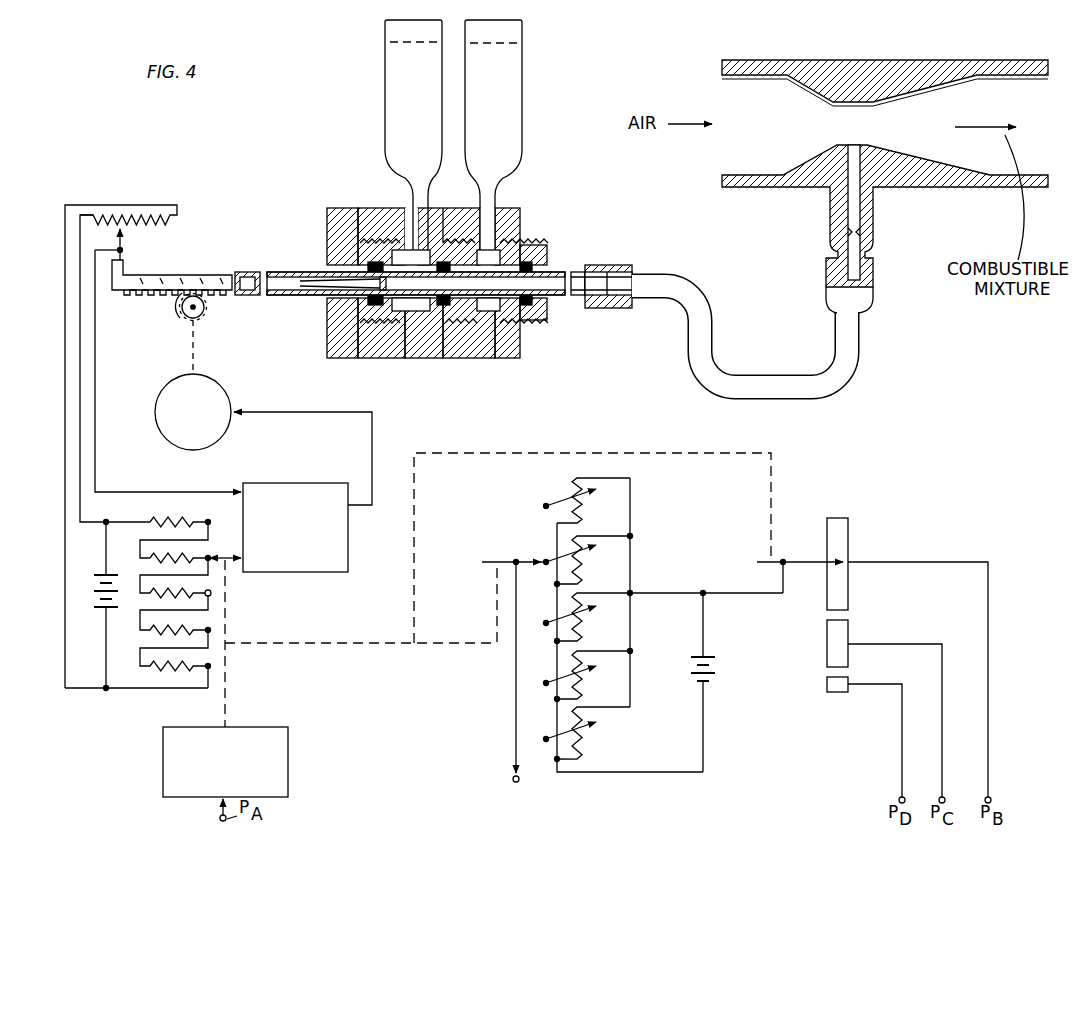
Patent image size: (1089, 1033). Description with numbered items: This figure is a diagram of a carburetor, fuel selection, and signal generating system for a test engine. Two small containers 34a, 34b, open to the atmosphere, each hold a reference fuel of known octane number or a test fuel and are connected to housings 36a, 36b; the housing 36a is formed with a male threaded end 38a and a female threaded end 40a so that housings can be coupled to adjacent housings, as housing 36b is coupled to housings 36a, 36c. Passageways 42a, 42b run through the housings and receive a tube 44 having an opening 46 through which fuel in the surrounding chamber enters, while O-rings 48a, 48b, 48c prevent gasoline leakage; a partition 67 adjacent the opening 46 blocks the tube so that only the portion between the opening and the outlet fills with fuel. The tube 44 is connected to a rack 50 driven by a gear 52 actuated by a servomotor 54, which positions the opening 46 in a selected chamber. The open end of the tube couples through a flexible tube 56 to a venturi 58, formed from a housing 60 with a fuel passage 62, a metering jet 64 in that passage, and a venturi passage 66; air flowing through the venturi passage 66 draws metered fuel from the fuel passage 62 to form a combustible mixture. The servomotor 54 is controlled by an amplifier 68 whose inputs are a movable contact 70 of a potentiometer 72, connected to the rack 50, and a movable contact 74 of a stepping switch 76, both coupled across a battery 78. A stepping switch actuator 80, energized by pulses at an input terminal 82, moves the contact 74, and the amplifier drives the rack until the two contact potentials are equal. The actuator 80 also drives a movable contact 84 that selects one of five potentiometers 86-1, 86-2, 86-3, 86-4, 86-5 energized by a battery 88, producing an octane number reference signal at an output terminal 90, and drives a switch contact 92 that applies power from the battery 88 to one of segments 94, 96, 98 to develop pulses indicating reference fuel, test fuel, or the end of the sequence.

The container 34a is at (508, 109).
The container 34b is at (398, 90).
The housing 36a is at (512, 215).
The housing 36b is at (390, 215).
The housing 36c is at (345, 215).
The male threaded end 38a is at (533, 250).
The female threaded end 40a is at (447, 220).
The passageway 42a is at (499, 318).
The passageway 42b is at (415, 330).
The tube 44 is at (575, 269).
The opening 46 is at (432, 328).
The O-ring 48a is at (540, 322).
The O-ring 48b is at (452, 318).
The O-ring 48c is at (345, 311).
The rack 50 is at (178, 280).
The gear 52 is at (201, 318).
The servomotor 54 is at (213, 389).
The flexible tube 56 is at (681, 283).
The venturi 58 is at (975, 190).
The housing 60 is at (835, 229).
The fuel passage 62 is at (853, 205).
The metering jet 64 is at (860, 233).
The venturi passage 66 is at (888, 125).
The partition 67 is at (323, 272).
The amplifier 68 is at (343, 563).
The movable contact 70 is at (123, 248).
The potentiometer 72 is at (150, 208).
The movable contact 74 is at (209, 556).
The stepping switch 76 is at (150, 518).
The battery 78 is at (100, 602).
The stepping switch actuator 80 is at (163, 740).
The input terminal 82 is at (219, 819).
The movable contact 84 is at (508, 561).
The potentiometer 86-1 is at (572, 490).
The potentiometer 86-2 is at (596, 553).
The potentiometer 86-3 is at (597, 612).
The potentiometer 86-4 is at (597, 678).
The potentiometer 86-5 is at (596, 733).
The battery 88 is at (709, 678).
The output terminal 90 is at (512, 781).
The switch contact 92 is at (817, 561).
The segment 94 is at (846, 546).
The segment 96 is at (826, 636).
The segment 98 is at (826, 684).